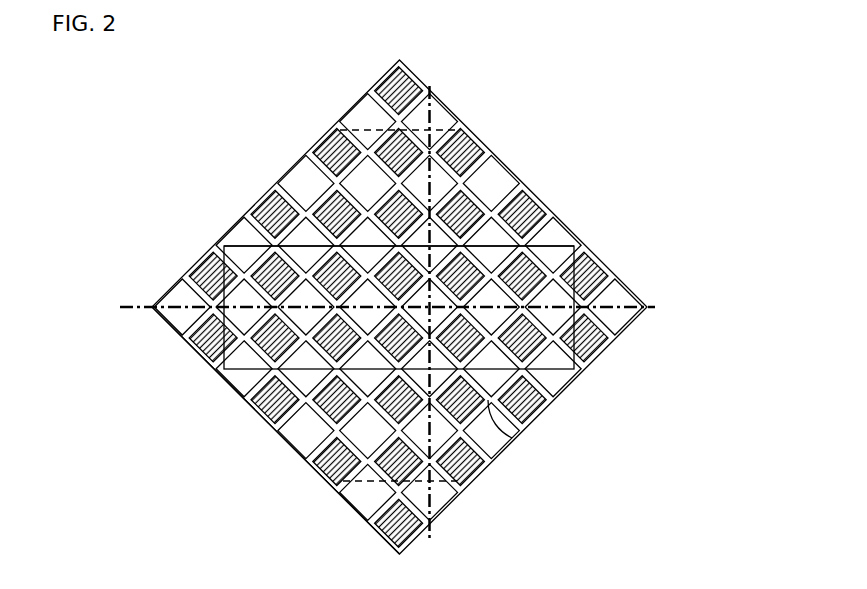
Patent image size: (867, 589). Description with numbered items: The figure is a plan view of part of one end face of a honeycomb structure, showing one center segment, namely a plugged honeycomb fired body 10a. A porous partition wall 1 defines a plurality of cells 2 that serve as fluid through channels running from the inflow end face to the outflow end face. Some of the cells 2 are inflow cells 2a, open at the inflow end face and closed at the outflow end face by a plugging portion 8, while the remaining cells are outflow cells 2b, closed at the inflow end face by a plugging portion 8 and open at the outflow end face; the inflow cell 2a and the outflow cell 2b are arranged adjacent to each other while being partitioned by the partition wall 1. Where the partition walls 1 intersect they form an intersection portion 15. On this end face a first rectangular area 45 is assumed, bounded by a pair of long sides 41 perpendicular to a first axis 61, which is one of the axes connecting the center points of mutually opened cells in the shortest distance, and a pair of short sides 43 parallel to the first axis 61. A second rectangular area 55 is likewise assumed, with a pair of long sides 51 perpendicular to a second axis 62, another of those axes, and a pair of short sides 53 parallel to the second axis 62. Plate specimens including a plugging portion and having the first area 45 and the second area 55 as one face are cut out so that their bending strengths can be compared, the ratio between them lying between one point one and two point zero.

The partition wall 1 is at (296, 441).
The cells 2 is at (417, 307).
The inflow cell 2a is at (307, 238).
The outflow cell 2b is at (272, 343).
The plugging portion 8 is at (258, 408).
The plugged honeycomb fired body 10a is at (724, 75).
The intersection portion 15 is at (512, 438).
The long sides 41 is at (332, 197).
The short sides 43 is at (365, 130).
The first rectangular area 45 is at (441, 130).
The long sides 51 is at (551, 247).
The short sides 53 is at (224, 314).
The second rectangular area 55 is at (494, 244).
The first axis 61 is at (596, 352).
The second axis 62 is at (433, 492).